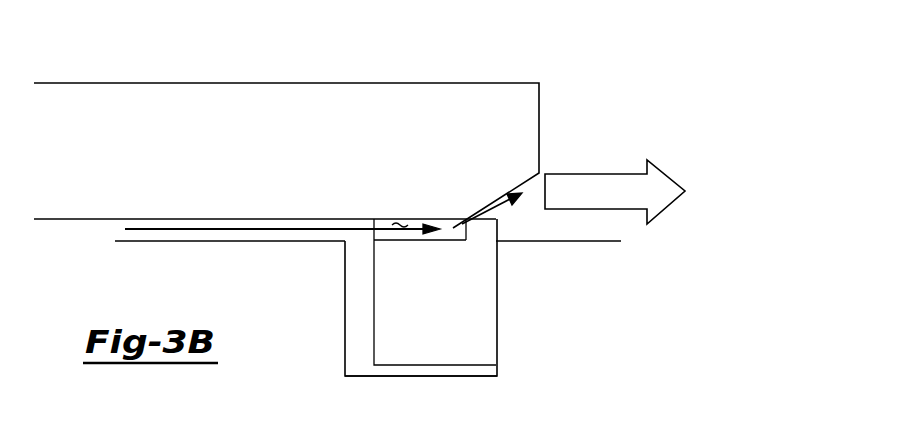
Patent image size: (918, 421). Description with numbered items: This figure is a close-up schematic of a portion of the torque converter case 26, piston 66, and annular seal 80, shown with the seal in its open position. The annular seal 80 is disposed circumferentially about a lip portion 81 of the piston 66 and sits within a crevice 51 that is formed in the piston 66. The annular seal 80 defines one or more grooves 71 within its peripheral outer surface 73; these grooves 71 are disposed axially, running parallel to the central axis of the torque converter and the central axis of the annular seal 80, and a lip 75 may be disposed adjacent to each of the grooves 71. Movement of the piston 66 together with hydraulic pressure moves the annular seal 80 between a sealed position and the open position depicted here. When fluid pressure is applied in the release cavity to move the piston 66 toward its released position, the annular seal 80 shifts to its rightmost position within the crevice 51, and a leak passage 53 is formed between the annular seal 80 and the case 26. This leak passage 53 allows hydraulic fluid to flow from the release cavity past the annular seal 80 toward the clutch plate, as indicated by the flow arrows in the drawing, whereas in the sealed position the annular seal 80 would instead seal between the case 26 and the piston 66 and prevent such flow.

The case 26 is at (519, 100).
The grooves 71 is at (402, 222).
The peripheral outer surface 73 is at (490, 215).
The leak passage 53 is at (471, 212).
The lip 75 is at (497, 228).
The piston 66 is at (298, 280).
The crevice 51 is at (358, 338).
The annular seal 80 is at (480, 327).
The lip portion 81 is at (473, 388).